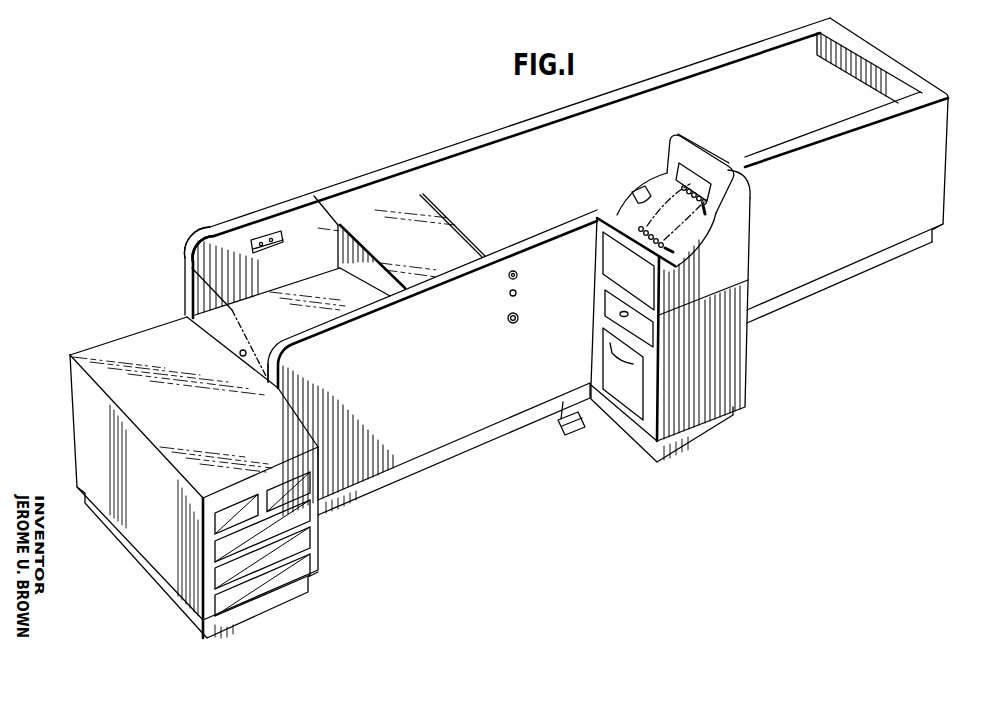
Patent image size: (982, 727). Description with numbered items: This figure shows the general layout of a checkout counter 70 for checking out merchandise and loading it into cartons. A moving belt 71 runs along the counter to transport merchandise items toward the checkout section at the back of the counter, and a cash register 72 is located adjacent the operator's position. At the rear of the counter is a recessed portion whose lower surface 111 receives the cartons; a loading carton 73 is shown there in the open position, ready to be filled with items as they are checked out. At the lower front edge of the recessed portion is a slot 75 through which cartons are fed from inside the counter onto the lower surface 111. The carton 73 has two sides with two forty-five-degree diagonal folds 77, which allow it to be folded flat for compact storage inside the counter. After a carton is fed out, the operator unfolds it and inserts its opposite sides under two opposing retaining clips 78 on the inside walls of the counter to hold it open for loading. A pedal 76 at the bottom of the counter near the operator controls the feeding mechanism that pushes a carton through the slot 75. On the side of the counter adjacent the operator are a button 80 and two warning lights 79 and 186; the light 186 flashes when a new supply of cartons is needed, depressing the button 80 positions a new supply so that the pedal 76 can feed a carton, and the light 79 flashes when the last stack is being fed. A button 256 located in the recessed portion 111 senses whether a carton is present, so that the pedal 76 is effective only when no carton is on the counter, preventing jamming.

The checkout counter 70 is at (477, 140).
The moving belt 71 is at (673, 115).
The cash register 72 is at (740, 238).
The loading carton 73 is at (207, 230).
The slot 75 is at (350, 272).
The pedal 76 is at (562, 427).
The forty-five-degree diagonal folds 77 is at (260, 353).
The retaining clips 78 is at (283, 240).
The warning light 79 is at (509, 276).
The button 80 is at (510, 295).
The lower surface of the recessed portion 111 is at (282, 287).
The warning light 186 is at (508, 320).
The button 256 is at (240, 353).